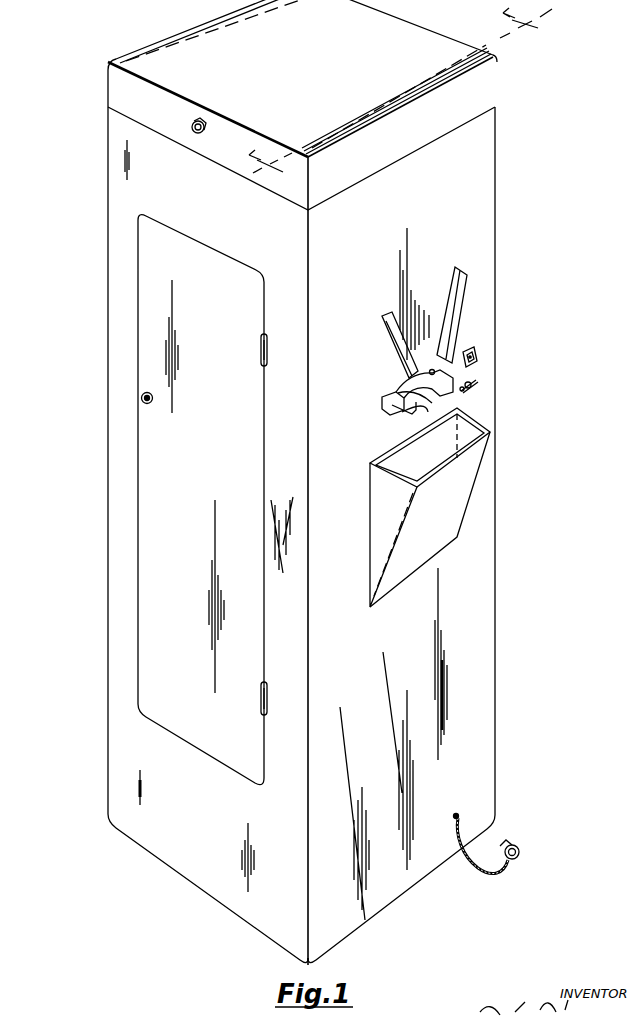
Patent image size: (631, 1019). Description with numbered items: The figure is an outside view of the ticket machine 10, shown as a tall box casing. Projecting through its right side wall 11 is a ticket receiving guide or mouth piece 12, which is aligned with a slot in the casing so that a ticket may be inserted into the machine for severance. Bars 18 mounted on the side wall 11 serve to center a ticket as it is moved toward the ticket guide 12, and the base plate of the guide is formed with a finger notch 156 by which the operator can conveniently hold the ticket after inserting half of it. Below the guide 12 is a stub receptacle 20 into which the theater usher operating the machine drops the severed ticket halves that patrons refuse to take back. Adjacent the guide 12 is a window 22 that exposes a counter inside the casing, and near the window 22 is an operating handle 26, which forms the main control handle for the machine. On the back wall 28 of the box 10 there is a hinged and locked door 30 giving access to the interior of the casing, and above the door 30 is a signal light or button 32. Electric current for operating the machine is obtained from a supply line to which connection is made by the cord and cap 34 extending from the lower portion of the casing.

The machine 10 is at (496, 520).
The right side wall 11 is at (478, 627).
The ticket receiving guide 12 is at (384, 415).
The bars 18 is at (451, 293).
The stub receptacle 20 is at (412, 562).
The window 22 is at (480, 353).
The operating handle 26 is at (479, 384).
The back wall 28 is at (118, 622).
The door 30 is at (148, 460).
The signal light 32 is at (191, 123).
The cord and cap 34 is at (520, 862).
The finger notch 156 is at (432, 415).